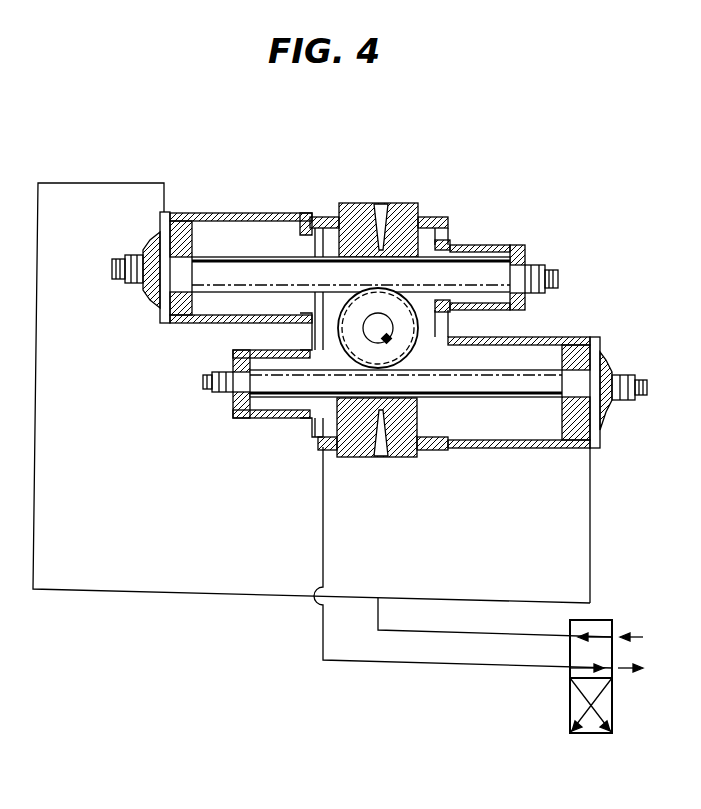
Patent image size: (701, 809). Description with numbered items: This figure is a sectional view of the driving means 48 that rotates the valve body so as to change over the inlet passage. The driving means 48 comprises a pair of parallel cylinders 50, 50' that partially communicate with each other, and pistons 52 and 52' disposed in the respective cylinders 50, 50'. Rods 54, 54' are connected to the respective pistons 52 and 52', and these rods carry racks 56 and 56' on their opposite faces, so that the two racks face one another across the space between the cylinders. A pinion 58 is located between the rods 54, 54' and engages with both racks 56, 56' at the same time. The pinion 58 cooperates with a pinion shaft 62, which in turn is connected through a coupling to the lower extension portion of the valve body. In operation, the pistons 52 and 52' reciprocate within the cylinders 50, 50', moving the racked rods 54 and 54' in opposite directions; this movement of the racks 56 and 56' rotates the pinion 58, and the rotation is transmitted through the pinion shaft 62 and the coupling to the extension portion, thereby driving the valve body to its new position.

The driving means 48 is at (582, 228).
The cylinder 50 is at (241, 247).
The cylinder 50' is at (519, 421).
The piston 52 is at (152, 288).
The piston 52' is at (604, 375).
The rod 54 is at (351, 231).
The rod 54' is at (406, 438).
The rack 56 is at (349, 324).
The rack 56' is at (413, 338).
The pinion 58 is at (436, 305).
The pinion shaft 62 is at (378, 328).